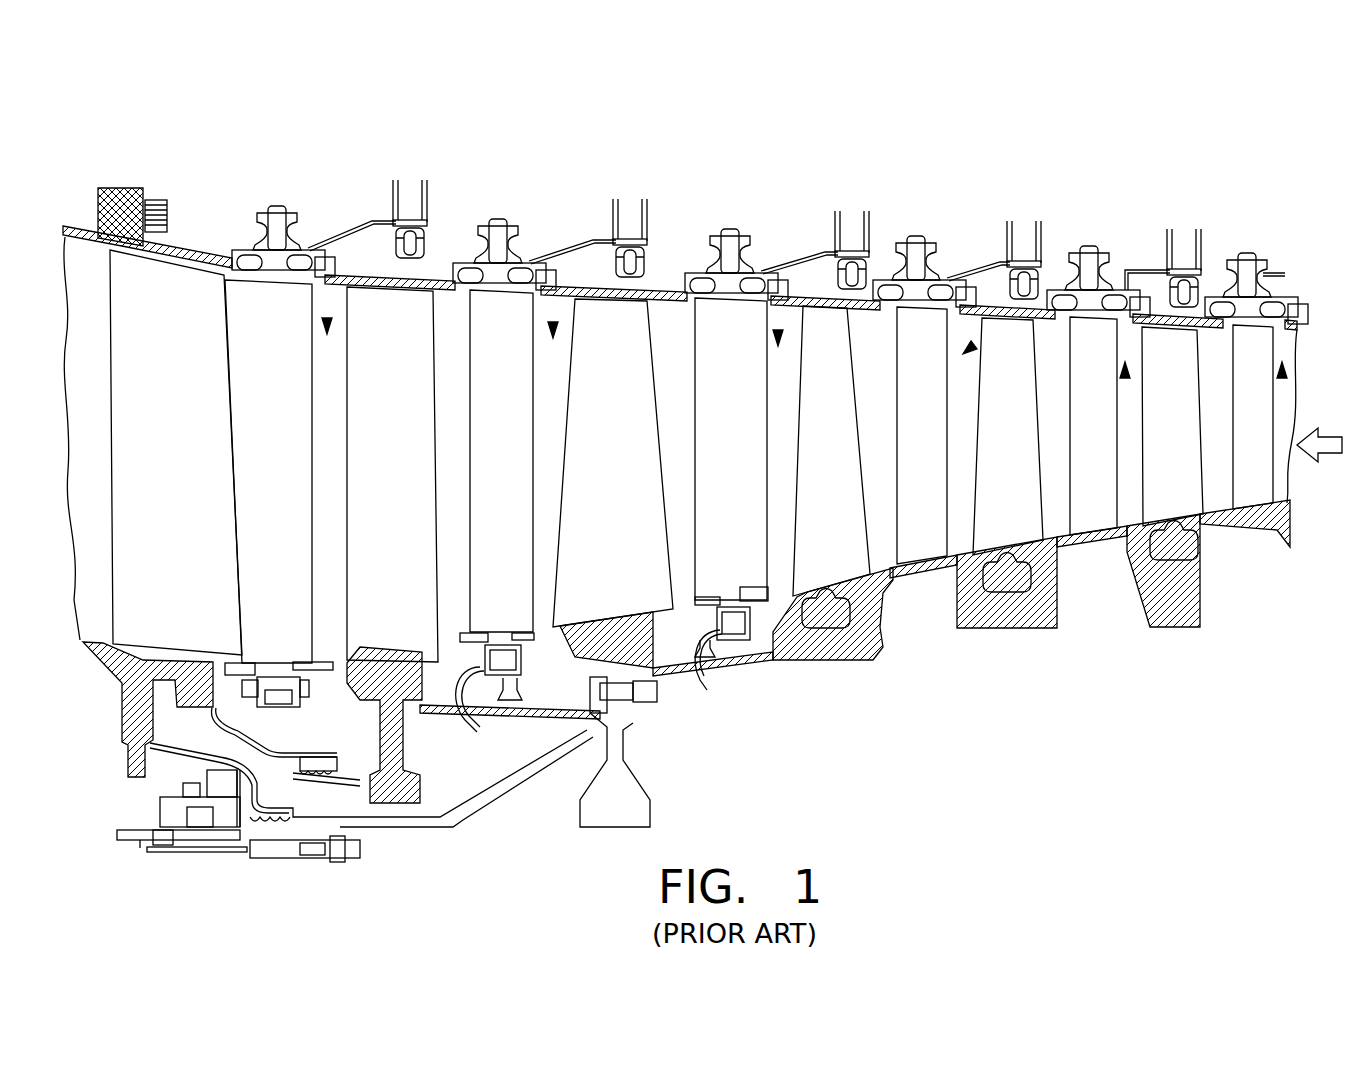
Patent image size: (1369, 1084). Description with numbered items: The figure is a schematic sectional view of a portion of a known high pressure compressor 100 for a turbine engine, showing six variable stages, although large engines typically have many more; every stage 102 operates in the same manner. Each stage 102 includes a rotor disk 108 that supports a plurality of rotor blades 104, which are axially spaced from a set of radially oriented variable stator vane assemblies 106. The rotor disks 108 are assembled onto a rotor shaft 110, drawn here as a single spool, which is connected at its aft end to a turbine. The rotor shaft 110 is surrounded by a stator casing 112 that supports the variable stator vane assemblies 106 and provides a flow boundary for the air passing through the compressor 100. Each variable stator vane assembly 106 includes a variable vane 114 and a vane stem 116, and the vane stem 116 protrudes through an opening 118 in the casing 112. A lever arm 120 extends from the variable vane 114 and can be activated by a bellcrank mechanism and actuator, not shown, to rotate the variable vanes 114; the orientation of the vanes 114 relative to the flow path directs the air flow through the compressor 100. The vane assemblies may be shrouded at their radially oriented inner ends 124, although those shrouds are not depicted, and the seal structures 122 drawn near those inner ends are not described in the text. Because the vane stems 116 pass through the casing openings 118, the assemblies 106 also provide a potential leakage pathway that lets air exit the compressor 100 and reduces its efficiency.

The compressor 100 is at (232, 145).
The stage 102 is at (327, 318).
The rotor blades 104 is at (365, 524).
The variable stator vane assemblies 106 is at (250, 229).
The rotor disk 108 is at (1052, 613).
The rotor shaft 110 is at (417, 830).
The stator casing 112 is at (112, 214).
The variable vane 114 is at (253, 349).
The vane stem 116 is at (266, 207).
The opening 118 is at (293, 257).
The lever arm 120 is at (330, 247).
The seal 122 is at (313, 683).
The radially oriented inner ends 124 is at (277, 700).